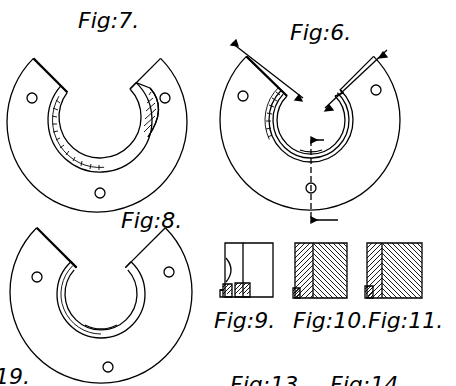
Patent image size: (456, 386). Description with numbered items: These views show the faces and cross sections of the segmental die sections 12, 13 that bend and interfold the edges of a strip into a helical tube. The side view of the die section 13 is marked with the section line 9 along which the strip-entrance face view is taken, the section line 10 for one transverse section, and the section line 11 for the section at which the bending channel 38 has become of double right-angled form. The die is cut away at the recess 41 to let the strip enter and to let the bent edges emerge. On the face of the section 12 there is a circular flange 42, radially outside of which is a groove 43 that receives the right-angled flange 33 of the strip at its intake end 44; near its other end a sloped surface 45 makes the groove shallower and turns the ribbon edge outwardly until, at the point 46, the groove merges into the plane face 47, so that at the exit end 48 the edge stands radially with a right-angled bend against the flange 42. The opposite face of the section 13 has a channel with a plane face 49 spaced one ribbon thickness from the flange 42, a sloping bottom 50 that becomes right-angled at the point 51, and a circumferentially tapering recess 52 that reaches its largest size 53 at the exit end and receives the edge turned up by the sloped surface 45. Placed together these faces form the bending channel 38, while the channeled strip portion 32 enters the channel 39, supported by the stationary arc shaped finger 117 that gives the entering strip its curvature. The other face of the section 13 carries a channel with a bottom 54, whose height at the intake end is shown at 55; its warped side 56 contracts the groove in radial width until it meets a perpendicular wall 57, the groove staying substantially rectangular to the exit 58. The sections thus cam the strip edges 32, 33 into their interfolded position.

In FIG. 6, the section line 9— 9 is at (275, 60).
In FIG. 6, the section line 10— 10 is at (334, 177).
In FIG. 6, the section line 11— 11 is at (366, 80).
In FIG. 9, the die section 12 is at (254, 252).
In FIG. 9, the die section 13 is at (230, 251).
In FIG. 9, the channeled portion of the strip 32 is at (227, 289).
In FIG. 10, the radially extending flange 33 is at (315, 277).
In FIG. 11, the radially extending flange 33 is at (371, 286).
In FIG. 9, the bending channel 38 is at (246, 285).
In FIG. 9, the bending channel 39 is at (226, 262).
In FIG. 7, the recess 41 is at (97, 130).
In FIG. 6, the recess 41 is at (310, 129).
In FIG. 8, the recess 41 is at (101, 305).
In FIG. 7, the circular flange 42 is at (68, 138).
In FIG. 7, the groove 43 is at (67, 107).
In FIG. 7, the intake end 44 is at (68, 90).
In FIG. 7, the sloped surface 45 is at (150, 88).
In FIG. 7, the merging point 46 is at (140, 100).
In FIG. 7, the plane face 47 is at (148, 82).
In FIG. 7, the exit end 48 is at (126, 92).
In FIG. 8, the plane face 49 is at (138, 286).
In FIG. 8, the sloping bottom 50 is at (150, 262).
In FIG. 8, the right-angled portion 51 is at (110, 335).
In FIG. 8, the circumferential recess 52 is at (58, 300).
In FIG. 8, the largest size of recess 53 is at (73, 264).
In FIG. 6, the channel bottom 54 is at (278, 128).
In FIG. 6, the channel height at intake end 55 is at (322, 84).
In FIG. 6, the warped side of groove 56 is at (270, 128).
In FIG. 6, the perpendicular wall 57 is at (312, 162).
In FIG. 6, the exit 58 is at (344, 72).
In FIG. 6, the arc shaped finger 117 is at (318, 80).
In FIG. 9, the arc shaped finger 117 is at (221, 297).